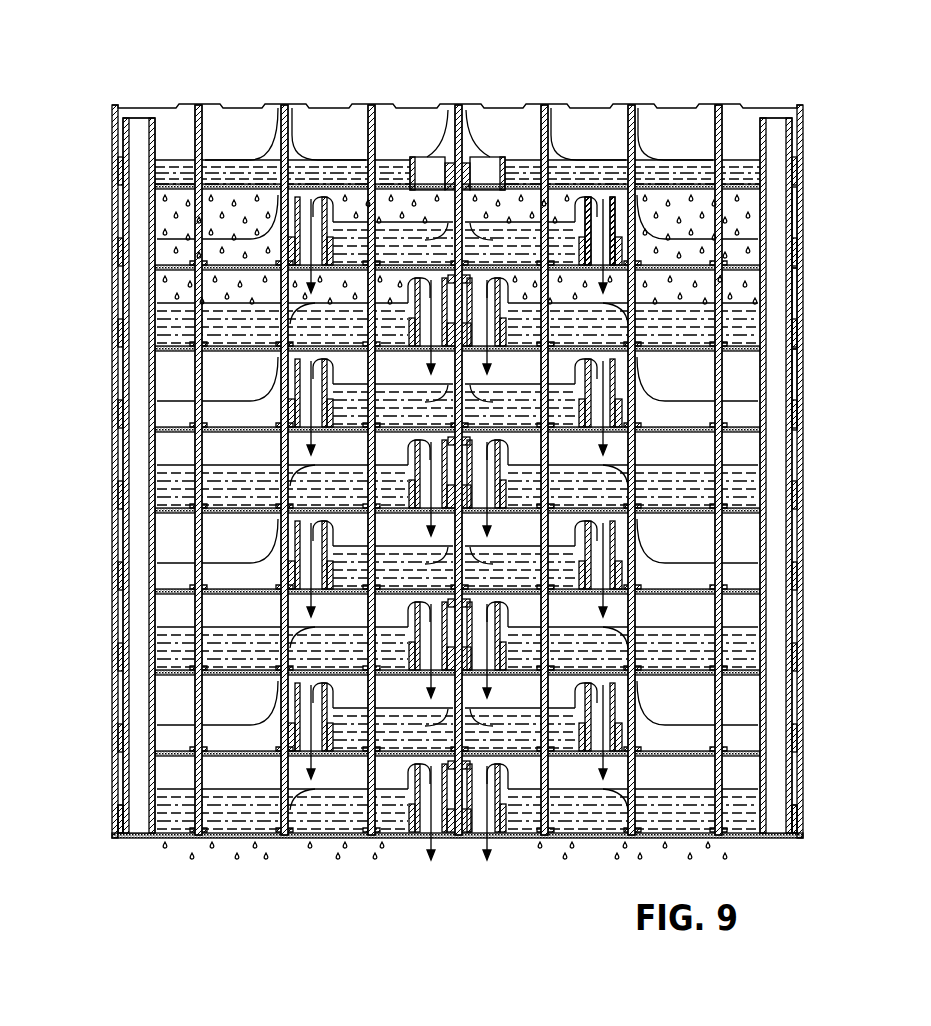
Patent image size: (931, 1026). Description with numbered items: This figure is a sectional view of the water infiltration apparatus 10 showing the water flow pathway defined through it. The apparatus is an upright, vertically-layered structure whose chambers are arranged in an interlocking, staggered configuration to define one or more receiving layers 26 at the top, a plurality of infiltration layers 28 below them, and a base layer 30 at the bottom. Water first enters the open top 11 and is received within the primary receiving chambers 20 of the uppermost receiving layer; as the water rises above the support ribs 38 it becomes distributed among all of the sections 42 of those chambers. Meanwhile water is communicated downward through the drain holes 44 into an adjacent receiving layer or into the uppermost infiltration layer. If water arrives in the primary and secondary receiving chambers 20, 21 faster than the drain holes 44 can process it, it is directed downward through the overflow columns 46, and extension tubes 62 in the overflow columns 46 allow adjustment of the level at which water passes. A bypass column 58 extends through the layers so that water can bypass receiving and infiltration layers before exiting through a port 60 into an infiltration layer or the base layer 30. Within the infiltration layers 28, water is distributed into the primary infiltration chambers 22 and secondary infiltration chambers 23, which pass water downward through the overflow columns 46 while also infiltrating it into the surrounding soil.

The water infiltration apparatus 10 is at (110, 77).
The open top 11 is at (374, 102).
The primary receiving chamber 20 is at (212, 106).
The secondary receiving chamber 21 is at (805, 220).
The primary infiltration chamber 22 is at (805, 296).
The secondary infiltration chamber 23 is at (805, 374).
The receiving layer 26 is at (80, 105).
The infiltration layer 28 is at (80, 271).
The base layer 30 is at (80, 758).
The support rib 38 is at (325, 170).
The section 42 is at (497, 155).
The drain hole 44 is at (230, 187).
The overflow column 46 is at (753, 172).
The bypass column 58 is at (140, 120).
The port 60 is at (150, 772).
The extension tube 62 is at (600, 204).